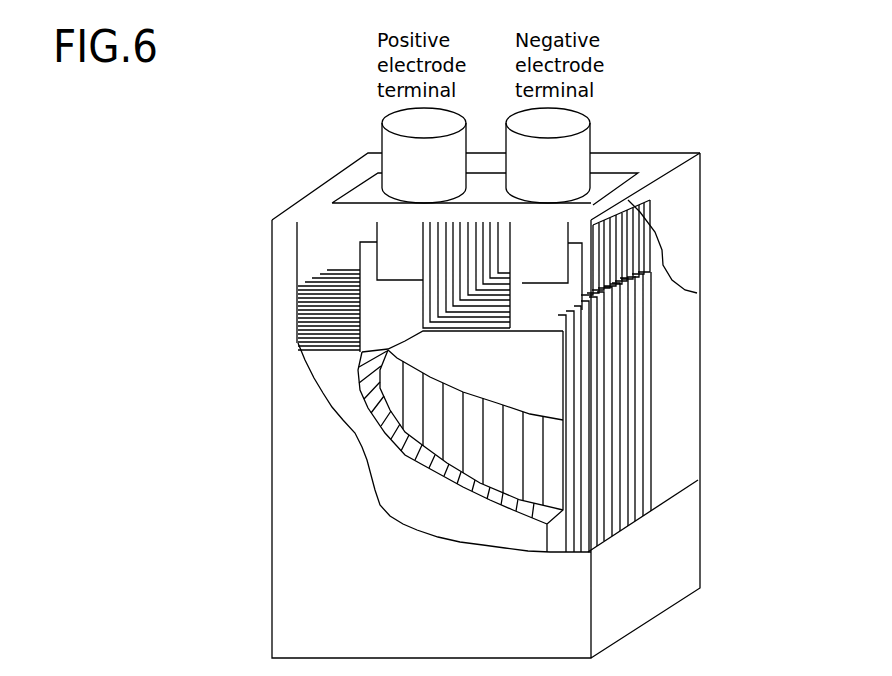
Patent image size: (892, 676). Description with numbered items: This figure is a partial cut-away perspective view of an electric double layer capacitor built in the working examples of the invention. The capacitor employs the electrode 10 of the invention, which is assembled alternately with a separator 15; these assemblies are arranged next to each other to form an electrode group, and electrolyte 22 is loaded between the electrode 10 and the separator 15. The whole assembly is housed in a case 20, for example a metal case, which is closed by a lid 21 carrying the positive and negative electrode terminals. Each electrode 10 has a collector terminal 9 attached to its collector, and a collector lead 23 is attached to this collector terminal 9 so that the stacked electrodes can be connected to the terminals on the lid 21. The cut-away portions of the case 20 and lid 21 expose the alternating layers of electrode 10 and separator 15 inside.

The collector terminal 9 is at (400, 316).
The electrode 10 is at (298, 343).
The separator 15 is at (435, 412).
The case 20 is at (287, 600).
The lid 21 is at (613, 172).
The electrolyte 22 is at (680, 447).
The collector lead 23 is at (397, 262).